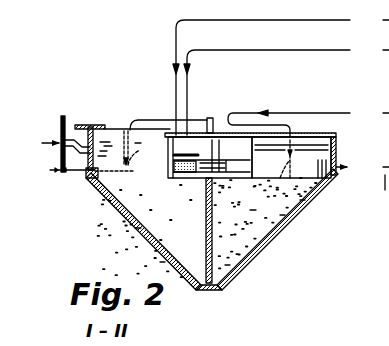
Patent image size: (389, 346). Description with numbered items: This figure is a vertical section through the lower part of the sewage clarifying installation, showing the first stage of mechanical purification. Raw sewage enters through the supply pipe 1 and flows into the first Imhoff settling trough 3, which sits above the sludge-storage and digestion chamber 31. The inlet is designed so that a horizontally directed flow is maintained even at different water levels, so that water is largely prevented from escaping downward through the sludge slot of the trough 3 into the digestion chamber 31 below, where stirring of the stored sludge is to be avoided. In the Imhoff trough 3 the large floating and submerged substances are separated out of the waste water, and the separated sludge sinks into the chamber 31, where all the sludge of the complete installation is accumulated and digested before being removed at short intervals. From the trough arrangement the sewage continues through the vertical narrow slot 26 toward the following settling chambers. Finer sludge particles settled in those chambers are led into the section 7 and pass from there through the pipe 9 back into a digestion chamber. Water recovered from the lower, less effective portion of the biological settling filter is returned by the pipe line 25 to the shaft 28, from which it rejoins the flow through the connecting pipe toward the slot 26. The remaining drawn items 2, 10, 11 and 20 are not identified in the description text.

The supply pipe 1 is at (66, 144).
The outlet 2 is at (384, 194).
The first Imhoff settling trough 3 is at (128, 130).
The section 7 is at (291, 163).
The pipe 9 is at (214, 146).
The tank 10 is at (224, 284).
The supply pipe 11 is at (284, 112).
The pipe 20 is at (176, 110).
The pipe line 25 is at (190, 96).
The vertical narrow slot 26 is at (342, 173).
The shaft 28 is at (185, 128).
The sludge-storage and digestion chamber 31 is at (207, 227).